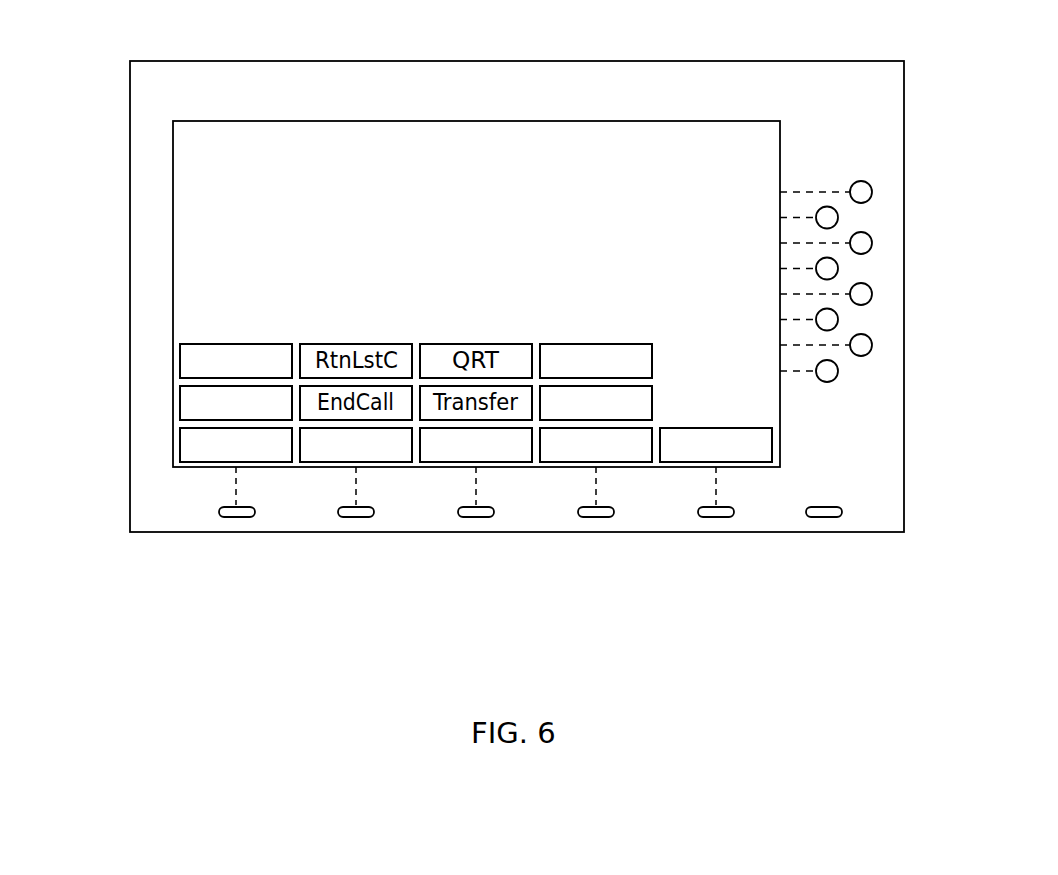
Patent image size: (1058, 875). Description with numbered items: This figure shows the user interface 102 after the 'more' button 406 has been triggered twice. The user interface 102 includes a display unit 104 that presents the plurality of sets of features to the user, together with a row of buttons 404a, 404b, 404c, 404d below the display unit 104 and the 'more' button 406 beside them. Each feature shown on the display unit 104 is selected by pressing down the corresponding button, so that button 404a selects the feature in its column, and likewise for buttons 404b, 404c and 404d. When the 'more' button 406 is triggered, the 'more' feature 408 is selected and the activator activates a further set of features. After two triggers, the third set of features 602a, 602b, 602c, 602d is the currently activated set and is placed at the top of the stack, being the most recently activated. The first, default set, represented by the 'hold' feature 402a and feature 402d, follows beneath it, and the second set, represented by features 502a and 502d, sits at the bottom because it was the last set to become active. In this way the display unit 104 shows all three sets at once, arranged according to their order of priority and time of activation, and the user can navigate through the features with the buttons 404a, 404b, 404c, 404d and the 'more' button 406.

The user interface 102 is at (865, 78).
The display unit 104 is at (210, 207).
The second set feature 502a is at (180, 362).
The second set feature 502d is at (653, 355).
The 'hold' feature 402a is at (180, 404).
The first set feature 402d is at (653, 398).
The third set feature 602a is at (180, 452).
The third set feature 602b is at (381, 456).
The third set feature 602c is at (501, 456).
The third set feature 602d is at (621, 456).
The 'more' feature 408 is at (697, 427).
The button 404a is at (235, 517).
The button 404b is at (354, 517).
The button 404c is at (474, 517).
The button 404d is at (594, 517).
The 'more' button 406 is at (714, 517).